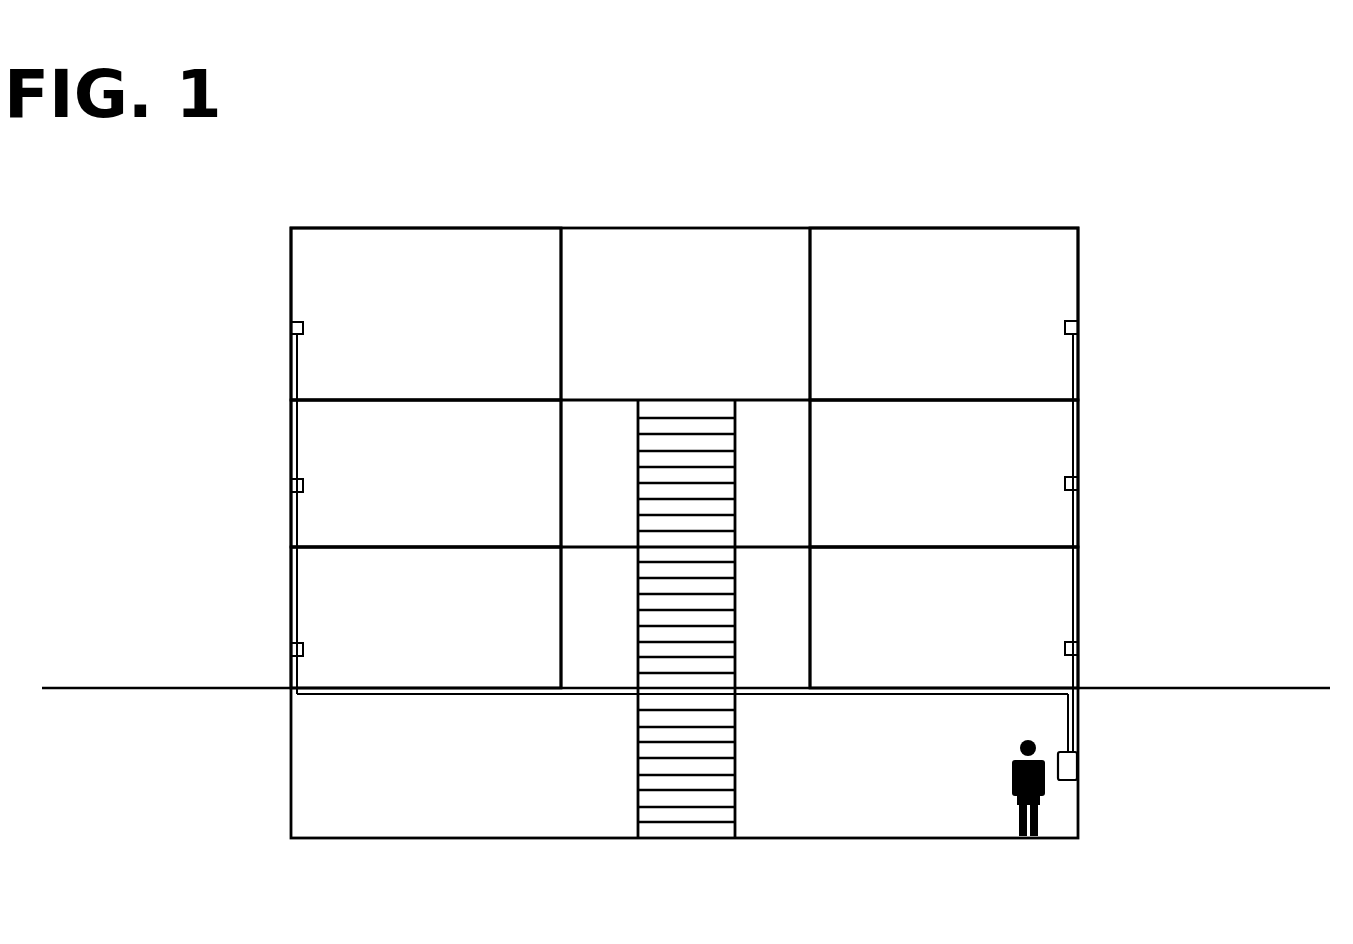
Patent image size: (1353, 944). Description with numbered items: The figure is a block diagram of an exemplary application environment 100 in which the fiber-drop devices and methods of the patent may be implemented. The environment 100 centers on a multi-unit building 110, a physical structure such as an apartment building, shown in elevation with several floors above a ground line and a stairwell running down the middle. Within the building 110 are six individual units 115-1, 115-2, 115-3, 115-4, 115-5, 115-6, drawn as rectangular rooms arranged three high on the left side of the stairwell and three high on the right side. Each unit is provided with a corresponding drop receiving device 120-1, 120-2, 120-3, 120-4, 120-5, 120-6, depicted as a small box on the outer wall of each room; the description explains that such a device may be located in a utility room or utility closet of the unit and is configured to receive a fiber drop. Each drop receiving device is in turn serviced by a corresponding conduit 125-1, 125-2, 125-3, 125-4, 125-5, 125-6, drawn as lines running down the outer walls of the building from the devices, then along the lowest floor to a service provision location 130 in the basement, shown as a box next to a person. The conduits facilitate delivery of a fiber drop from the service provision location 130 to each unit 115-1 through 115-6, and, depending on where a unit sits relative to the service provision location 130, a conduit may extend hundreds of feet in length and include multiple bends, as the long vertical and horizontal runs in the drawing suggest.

The application environment 100 is at (942, 153).
The multi-unit building 110 is at (291, 258).
The unit 115-1 is at (531, 277).
The unit 115-2 is at (537, 448).
The unit 115-3 is at (535, 599).
The unit 115-4 is at (899, 288).
The unit 115-5 is at (909, 443).
The unit 115-6 is at (915, 599).
The drop receiving device 120-1 is at (303, 330).
The drop receiving device 120-2 is at (303, 485).
The drop receiving device 120-3 is at (303, 645).
The drop receiving device 120-4 is at (1068, 321).
The drop receiving device 120-5 is at (1065, 485).
The drop receiving device 120-6 is at (1065, 649).
The conduit 125-1 is at (297, 393).
The conduit 125-2 is at (302, 528).
The conduit 125-3 is at (408, 692).
The conduit 125-4 is at (1073, 388).
The conduit 125-5 is at (1073, 527).
The conduit 125-6 is at (1073, 669).
The service provision location 130 is at (1067, 768).